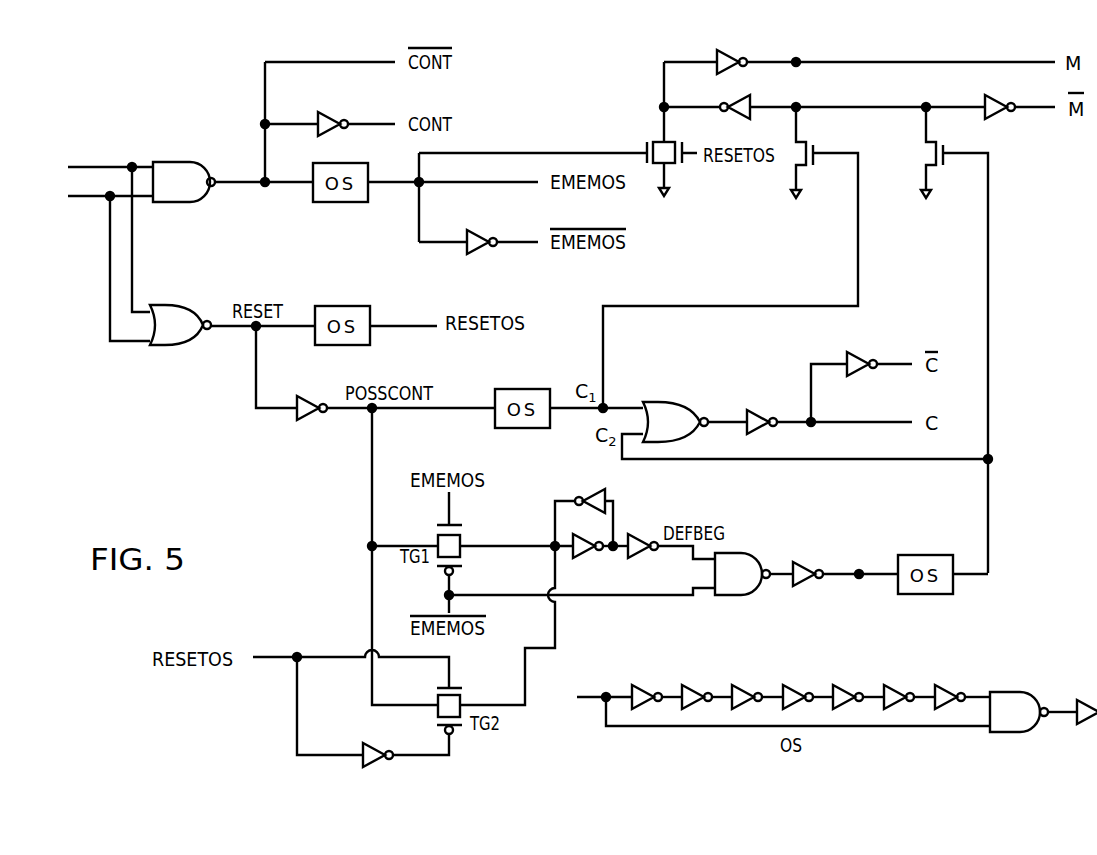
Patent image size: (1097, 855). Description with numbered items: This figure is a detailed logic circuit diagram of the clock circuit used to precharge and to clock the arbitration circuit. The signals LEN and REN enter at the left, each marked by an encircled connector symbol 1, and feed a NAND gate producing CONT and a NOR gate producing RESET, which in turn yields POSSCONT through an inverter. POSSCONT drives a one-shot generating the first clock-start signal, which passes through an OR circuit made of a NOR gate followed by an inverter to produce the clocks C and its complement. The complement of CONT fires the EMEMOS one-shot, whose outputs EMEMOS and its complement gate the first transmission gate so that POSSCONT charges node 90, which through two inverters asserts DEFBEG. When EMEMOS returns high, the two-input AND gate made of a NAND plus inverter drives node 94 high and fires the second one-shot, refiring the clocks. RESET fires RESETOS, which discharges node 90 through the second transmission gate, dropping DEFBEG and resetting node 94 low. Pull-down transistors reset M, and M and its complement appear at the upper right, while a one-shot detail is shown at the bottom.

The input terminal 1 is at (89, 182).
The node 90 is at (538, 519).
The node 94 is at (860, 555).